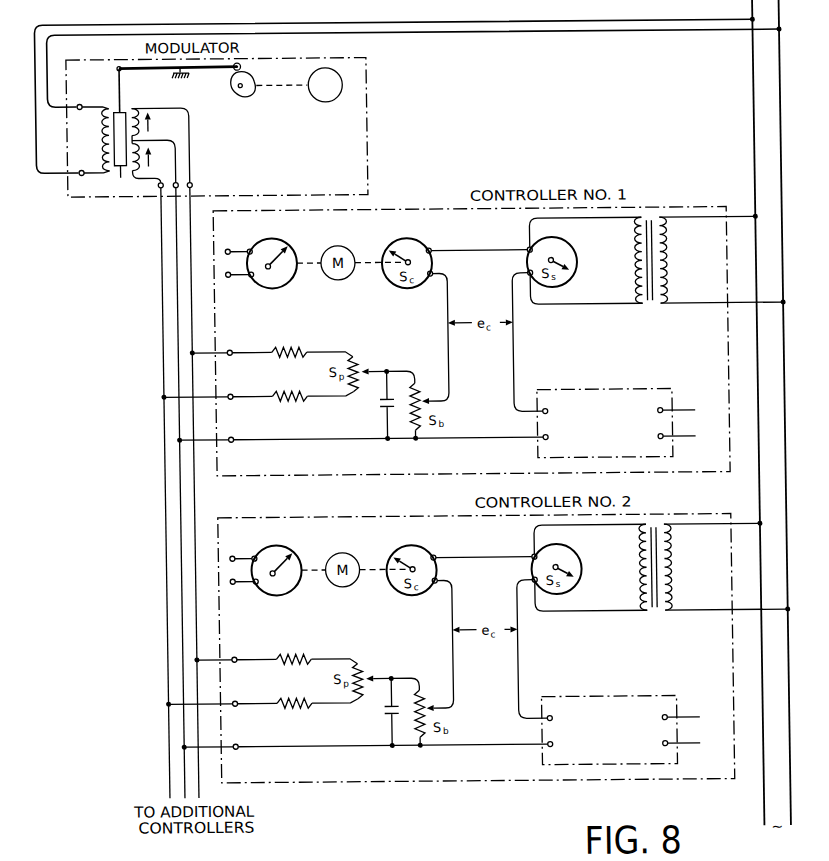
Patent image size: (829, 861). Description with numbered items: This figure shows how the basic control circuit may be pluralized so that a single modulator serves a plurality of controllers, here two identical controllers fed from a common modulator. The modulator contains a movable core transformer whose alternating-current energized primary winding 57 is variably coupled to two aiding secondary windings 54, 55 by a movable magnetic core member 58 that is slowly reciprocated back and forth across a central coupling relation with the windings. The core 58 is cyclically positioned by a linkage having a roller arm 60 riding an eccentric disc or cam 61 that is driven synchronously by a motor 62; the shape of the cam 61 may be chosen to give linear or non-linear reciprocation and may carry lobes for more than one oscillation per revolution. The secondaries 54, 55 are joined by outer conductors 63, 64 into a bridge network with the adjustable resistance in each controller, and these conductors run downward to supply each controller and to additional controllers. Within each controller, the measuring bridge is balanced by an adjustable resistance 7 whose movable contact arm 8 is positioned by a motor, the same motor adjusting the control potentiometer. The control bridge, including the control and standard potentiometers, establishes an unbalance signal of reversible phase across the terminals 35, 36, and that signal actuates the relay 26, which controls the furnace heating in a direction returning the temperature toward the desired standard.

The adjustable resistance 7 is at (258, 245).
The movable contact arm 8 is at (266, 265).
The relay 26 is at (619, 576).
The terminal 35 is at (557, 564).
The terminal 36 is at (557, 589).
The secondary winding 54 is at (140, 108).
The secondary winding 55 is at (136, 171).
The primary winding 57 is at (99, 140).
The movable magnetic core member 58 is at (120, 176).
The roller arm 60 is at (247, 66).
The cam 61 is at (247, 98).
The motor 62 is at (331, 103).
The outer conductor 63 is at (190, 498).
The outer conductor 64 is at (160, 489).